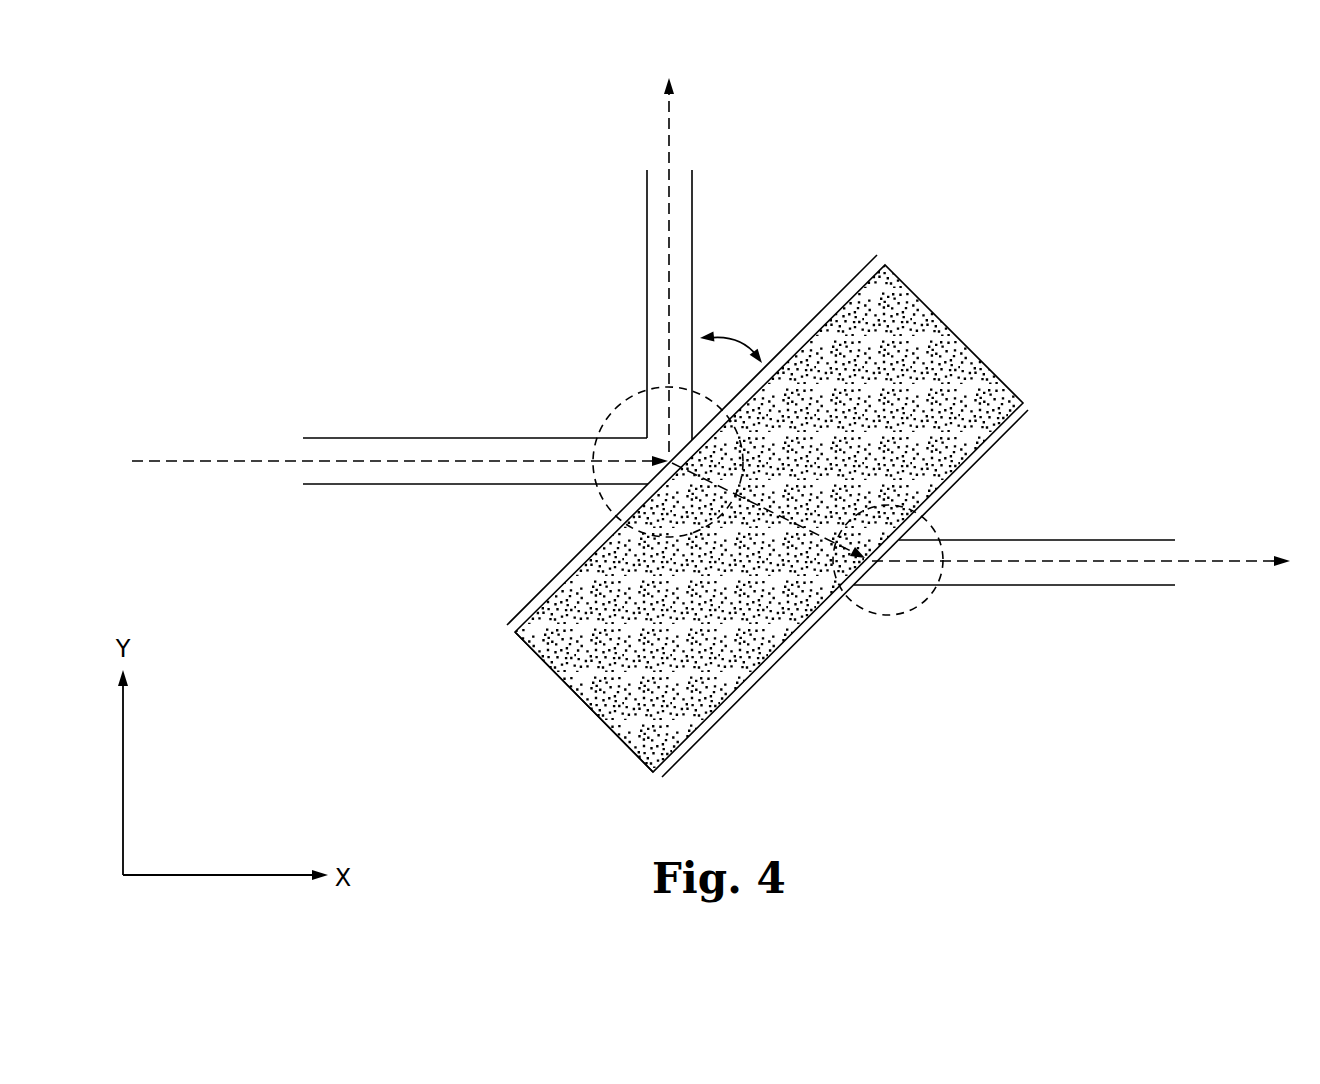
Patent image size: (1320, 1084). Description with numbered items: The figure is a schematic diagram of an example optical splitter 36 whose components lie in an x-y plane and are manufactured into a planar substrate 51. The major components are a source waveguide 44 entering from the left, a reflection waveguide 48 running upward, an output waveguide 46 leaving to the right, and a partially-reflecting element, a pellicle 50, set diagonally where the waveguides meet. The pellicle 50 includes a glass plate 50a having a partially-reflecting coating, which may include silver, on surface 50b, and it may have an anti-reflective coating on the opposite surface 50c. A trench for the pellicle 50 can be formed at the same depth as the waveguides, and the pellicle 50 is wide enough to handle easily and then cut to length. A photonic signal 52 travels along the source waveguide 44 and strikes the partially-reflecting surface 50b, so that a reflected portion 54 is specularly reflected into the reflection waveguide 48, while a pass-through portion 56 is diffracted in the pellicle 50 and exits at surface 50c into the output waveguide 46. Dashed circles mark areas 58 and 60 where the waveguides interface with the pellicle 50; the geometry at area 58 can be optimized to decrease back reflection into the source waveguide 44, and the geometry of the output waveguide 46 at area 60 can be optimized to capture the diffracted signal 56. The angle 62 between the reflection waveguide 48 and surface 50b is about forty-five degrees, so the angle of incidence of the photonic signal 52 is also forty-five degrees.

The optical splitter 36 is at (978, 272).
The source waveguide 44 is at (443, 437).
The output waveguide 46 is at (1067, 516).
The reflection waveguide 48 is at (692, 213).
The pellicle 50 is at (663, 635).
The glass plate 50a is at (586, 723).
The partially-reflecting surface 50b is at (498, 635).
The opposite surface 50c is at (646, 780).
The planar substrate 51 is at (783, 730).
The photonic signal 52 is at (477, 463).
The reflected portion 54 is at (669, 252).
The pass-through portion 56 is at (798, 528).
The interface area 58 is at (611, 389).
The interface area 60 is at (935, 610).
The angle 62 is at (735, 340).